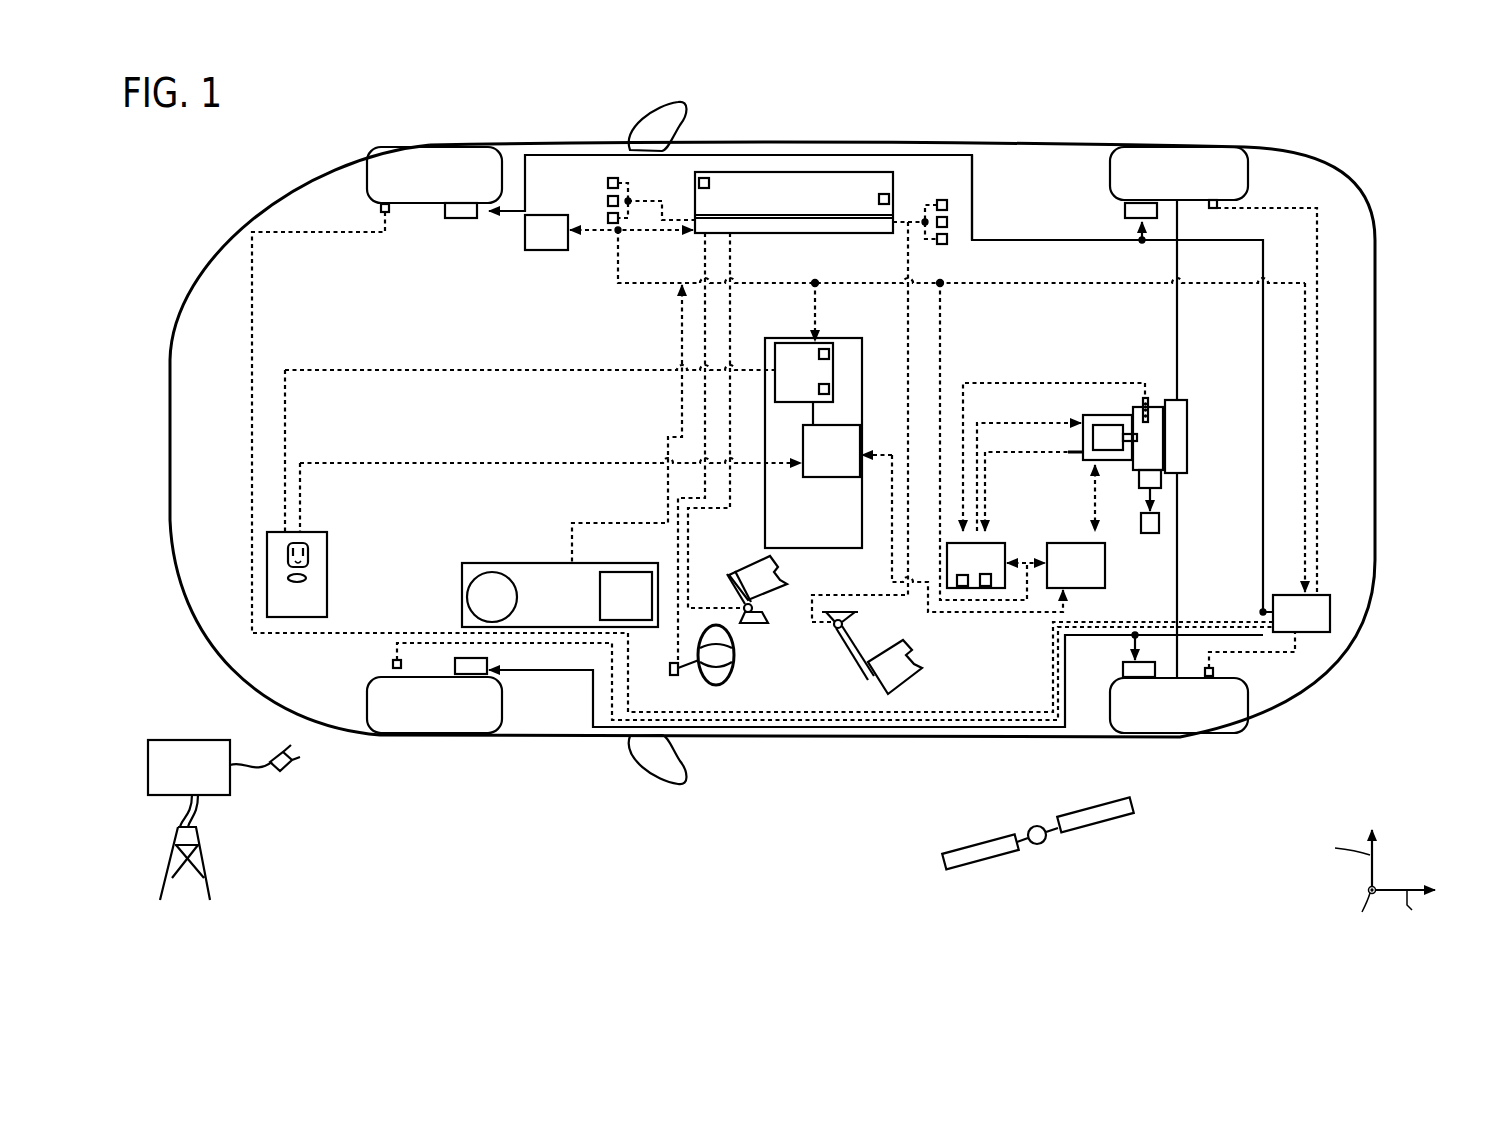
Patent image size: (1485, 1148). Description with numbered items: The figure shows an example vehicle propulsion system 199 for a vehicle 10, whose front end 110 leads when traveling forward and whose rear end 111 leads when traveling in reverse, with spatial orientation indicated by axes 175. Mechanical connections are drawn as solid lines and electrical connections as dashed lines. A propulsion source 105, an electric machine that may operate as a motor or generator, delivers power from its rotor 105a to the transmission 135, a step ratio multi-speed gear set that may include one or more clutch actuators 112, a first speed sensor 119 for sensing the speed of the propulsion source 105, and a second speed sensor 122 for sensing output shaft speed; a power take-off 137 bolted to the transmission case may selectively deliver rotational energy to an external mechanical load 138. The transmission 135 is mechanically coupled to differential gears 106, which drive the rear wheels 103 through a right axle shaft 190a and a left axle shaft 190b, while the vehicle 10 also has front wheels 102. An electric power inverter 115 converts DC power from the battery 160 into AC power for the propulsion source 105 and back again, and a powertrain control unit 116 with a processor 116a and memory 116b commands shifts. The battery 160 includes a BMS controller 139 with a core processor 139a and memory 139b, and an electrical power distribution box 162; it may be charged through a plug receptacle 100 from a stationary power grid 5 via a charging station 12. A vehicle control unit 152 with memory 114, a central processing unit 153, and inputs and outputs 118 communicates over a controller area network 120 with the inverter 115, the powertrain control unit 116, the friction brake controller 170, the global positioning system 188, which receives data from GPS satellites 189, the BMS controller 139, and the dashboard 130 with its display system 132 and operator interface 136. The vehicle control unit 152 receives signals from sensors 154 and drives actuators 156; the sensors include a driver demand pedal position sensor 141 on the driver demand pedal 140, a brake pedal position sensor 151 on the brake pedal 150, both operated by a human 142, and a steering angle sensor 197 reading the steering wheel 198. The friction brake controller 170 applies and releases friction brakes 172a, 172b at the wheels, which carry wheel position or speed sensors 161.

The vehicle 10 is at (992, 143).
The charging station 12 is at (224, 767).
The stationary power grid 5 is at (208, 887).
The plug receptacle 100 is at (327, 593).
The front wheels 102 is at (440, 150).
The rear wheels 103 is at (1165, 147).
The propulsion source 105 is at (1085, 462).
The rotor 105a is at (1118, 440).
The differential gears 106 is at (1178, 400).
The front end 110 is at (135, 233).
The rear end 111 is at (1420, 182).
The clutch actuators 112 is at (1287, 437).
The memory 114 is at (702, 180).
The electric power inverter 115 is at (998, 533).
The powertrain control unit 116 is at (1042, 441).
The processor 116a is at (961, 588).
The memory 116b is at (986, 588).
The inputs and outputs 118 is at (840, 232).
The first speed sensor 119 is at (1070, 453).
The controller area network 120 is at (786, 288).
The second speed sensor 122 is at (1143, 403).
The dashboard 130 is at (482, 562).
The display system 132 is at (492, 597).
The transmission 135 is at (1148, 405).
The operator interface 136 is at (626, 596).
The gear selector actuator 137 is at (1146, 474).
The external mechanical load 138 is at (1151, 524).
The BMS controller 139 is at (559, 437).
The core processor 139a is at (826, 348).
The memory 139b is at (830, 388).
The driver demand pedal 140 is at (728, 598).
The driver demand pedal position sensor 141 is at (754, 608).
The human 142 is at (760, 572).
The brake pedal 150 is at (866, 672).
The brake pedal position sensor 151 is at (834, 628).
The vehicle control unit 152 is at (794, 202).
The central processing unit 153 is at (889, 197).
The sensors 154 is at (598, 205).
The actuators 156 is at (958, 240).
The battery 160 is at (813, 443).
The wheel position or speed sensors 161 is at (383, 207).
The electrical power distribution box 162 is at (596, 467).
The friction brake controller 170 is at (909, 441).
The friction brakes 172a is at (455, 215).
The friction brakes 172b is at (1125, 210).
The axes 175 is at (1397, 843).
The global positioning system 188 is at (609, 232).
The GPS satellites 189 is at (1082, 832).
The right axle shaft 190a is at (1180, 332).
The left axle shaft 190b is at (1177, 588).
The steering angle sensor 197 is at (670, 670).
The steering wheel 198 is at (730, 668).
The vehicle propulsion system 199 is at (980, 216).